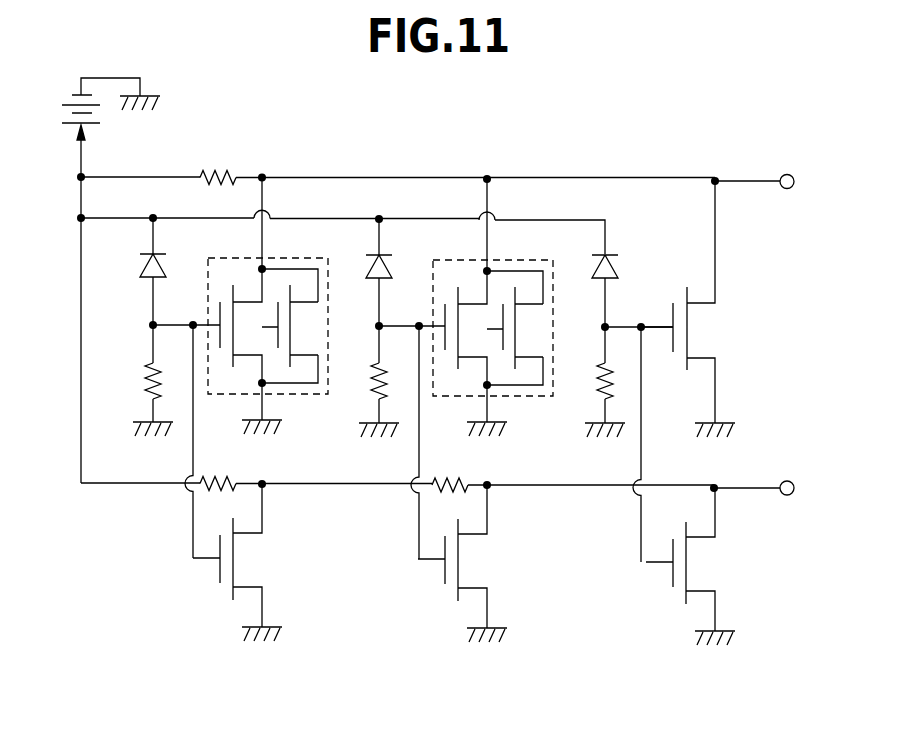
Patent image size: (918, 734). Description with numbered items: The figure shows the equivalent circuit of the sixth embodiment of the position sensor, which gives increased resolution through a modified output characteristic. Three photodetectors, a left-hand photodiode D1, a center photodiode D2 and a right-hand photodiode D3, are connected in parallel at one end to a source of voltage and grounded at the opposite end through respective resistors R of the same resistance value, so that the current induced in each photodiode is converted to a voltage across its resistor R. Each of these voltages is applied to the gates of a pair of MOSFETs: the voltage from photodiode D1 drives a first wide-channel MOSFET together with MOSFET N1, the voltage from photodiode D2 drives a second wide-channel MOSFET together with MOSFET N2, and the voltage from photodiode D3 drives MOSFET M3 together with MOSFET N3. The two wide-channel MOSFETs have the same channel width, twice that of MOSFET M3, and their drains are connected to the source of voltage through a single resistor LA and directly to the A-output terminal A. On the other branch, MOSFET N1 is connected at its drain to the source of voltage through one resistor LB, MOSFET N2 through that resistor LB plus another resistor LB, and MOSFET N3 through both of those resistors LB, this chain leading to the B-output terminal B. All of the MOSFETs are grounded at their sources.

The resistor LA is at (225, 164).
The resistor LB is at (240, 476).
The A-output terminal A is at (764, 182).
The B-output terminal B is at (763, 489).
The left-hand photodiode D1 is at (170, 262).
The center photodiode D2 is at (398, 262).
The right-hand photodiode D3 is at (623, 265).
The resistor R is at (132, 380).
The MOSFET M3 is at (718, 333).
The MOSFET N1 is at (263, 564).
The MOSFET N2 is at (490, 564).
The MOSFET N3 is at (717, 567).